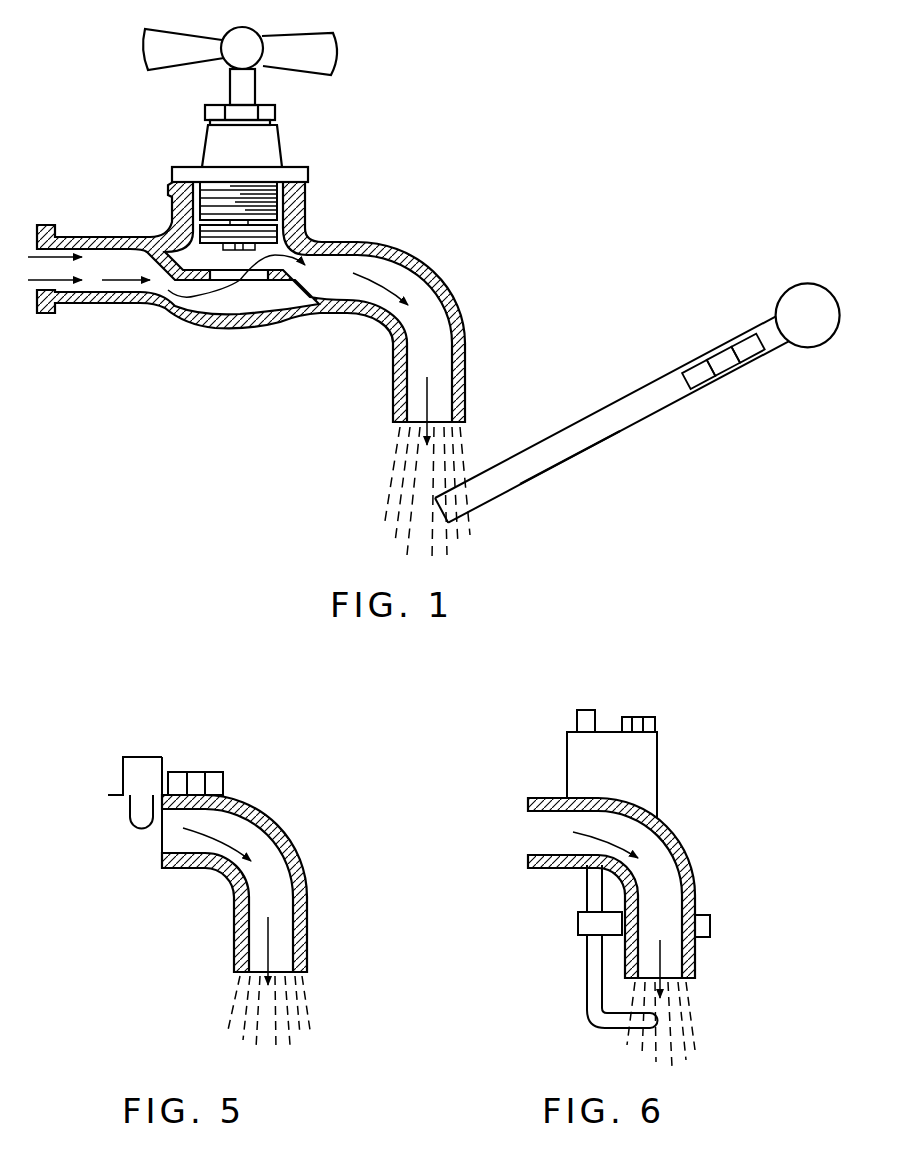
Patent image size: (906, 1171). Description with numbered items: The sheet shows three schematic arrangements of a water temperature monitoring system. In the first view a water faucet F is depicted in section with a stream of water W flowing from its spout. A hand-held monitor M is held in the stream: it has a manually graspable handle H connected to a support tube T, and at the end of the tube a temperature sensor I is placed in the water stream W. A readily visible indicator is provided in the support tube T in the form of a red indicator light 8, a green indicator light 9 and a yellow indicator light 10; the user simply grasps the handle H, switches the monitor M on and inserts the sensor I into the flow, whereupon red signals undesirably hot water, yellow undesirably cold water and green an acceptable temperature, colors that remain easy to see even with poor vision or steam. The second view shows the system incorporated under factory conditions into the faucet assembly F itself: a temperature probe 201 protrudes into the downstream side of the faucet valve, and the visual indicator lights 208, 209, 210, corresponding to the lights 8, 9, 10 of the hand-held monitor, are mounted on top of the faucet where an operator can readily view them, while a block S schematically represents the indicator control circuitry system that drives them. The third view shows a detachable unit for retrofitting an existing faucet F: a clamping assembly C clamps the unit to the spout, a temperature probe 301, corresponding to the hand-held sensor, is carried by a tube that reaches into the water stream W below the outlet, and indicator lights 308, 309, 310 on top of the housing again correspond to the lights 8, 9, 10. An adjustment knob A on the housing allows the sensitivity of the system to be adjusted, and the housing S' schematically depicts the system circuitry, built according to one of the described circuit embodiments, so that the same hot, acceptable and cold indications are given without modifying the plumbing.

In FIG. 1, the water faucet F is at (435, 269).
In FIG. 5, the water faucet F is at (287, 833).
In FIG. 6, the water faucet F is at (682, 838).
In FIG. 1, the stream of water W is at (443, 463).
In FIG. 5, the stream of water W is at (300, 1008).
In FIG. 6, the stream of water W is at (675, 1010).
In FIG. 1, the monitor M is at (602, 402).
In FIG. 1, the support tube T is at (578, 452).
In FIG. 1, the temperature sensor I is at (462, 505).
In FIG. 1, the handle H is at (797, 293).
In FIG. 1, the red indicator light 8 is at (753, 347).
In FIG. 1, the green indicator light 9 is at (722, 362).
In FIG. 1, the yellow indicator light 10 is at (692, 376).
In FIG. 5, the indicator control circuitry system S is at (119, 810).
In FIG. 5, the temperature probe 201 is at (143, 815).
In FIG. 5, the indicator light 208 is at (177, 782).
In FIG. 5, the indicator light 209 is at (195, 782).
In FIG. 5, the indicator light 210 is at (218, 788).
In FIG. 6, the adjustment knob A is at (575, 713).
In FIG. 6, the indicator light 308 is at (623, 717).
In FIG. 6, the indicator light 309 is at (638, 717).
In FIG. 6, the indicator light 310 is at (658, 722).
In FIG. 6, the system circuitry S' is at (639, 775).
In FIG. 6, the clamping assembly C is at (578, 922).
In FIG. 6, the temperature probe 301 is at (648, 1028).